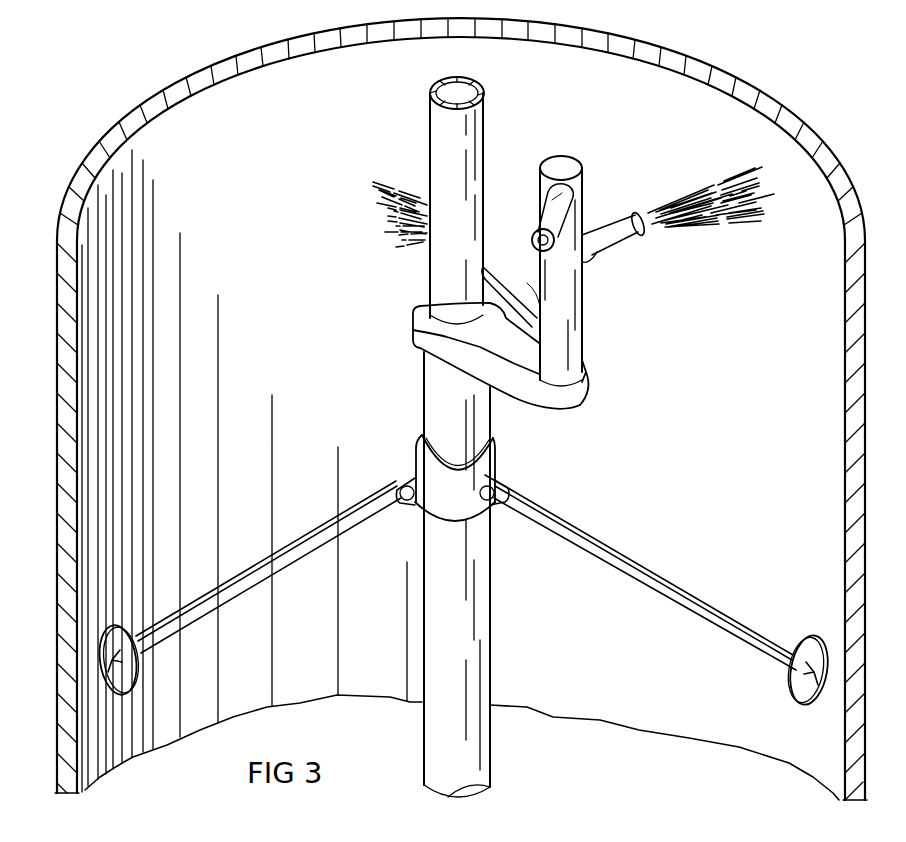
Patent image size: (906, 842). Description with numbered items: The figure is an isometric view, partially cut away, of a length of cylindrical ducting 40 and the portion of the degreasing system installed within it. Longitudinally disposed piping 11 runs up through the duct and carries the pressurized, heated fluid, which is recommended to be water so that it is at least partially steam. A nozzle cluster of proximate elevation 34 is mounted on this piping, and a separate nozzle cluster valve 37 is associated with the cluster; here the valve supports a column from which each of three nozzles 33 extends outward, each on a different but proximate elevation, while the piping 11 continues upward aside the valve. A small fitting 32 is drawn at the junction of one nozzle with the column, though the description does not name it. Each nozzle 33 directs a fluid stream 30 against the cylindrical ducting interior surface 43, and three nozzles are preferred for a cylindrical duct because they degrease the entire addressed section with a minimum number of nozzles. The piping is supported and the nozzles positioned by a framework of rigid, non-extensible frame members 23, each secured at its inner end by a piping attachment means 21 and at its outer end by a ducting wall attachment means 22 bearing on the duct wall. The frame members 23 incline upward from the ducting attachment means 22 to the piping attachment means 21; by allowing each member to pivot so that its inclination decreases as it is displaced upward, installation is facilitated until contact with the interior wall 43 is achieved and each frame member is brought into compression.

The piping 11 is at (440, 118).
The piping attachment means 21 is at (397, 475).
The ducting wall attachment means 22 is at (100, 663).
The rigid, non-extensible frame members 23 is at (283, 560).
The fluid stream 30 is at (388, 190).
The swivel ring 32 is at (545, 229).
The nozzle 33 is at (511, 282).
The nozzle cluster of proximate elevation 34 is at (620, 288).
The nozzle cluster valve 37 is at (553, 398).
The ducting 40 is at (738, 88).
The cylindrical ducting interior surface 43 is at (140, 140).